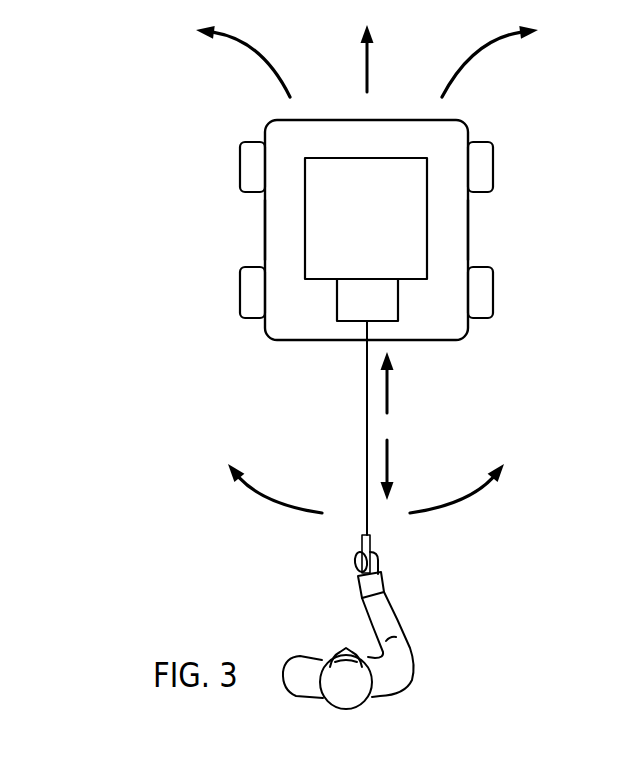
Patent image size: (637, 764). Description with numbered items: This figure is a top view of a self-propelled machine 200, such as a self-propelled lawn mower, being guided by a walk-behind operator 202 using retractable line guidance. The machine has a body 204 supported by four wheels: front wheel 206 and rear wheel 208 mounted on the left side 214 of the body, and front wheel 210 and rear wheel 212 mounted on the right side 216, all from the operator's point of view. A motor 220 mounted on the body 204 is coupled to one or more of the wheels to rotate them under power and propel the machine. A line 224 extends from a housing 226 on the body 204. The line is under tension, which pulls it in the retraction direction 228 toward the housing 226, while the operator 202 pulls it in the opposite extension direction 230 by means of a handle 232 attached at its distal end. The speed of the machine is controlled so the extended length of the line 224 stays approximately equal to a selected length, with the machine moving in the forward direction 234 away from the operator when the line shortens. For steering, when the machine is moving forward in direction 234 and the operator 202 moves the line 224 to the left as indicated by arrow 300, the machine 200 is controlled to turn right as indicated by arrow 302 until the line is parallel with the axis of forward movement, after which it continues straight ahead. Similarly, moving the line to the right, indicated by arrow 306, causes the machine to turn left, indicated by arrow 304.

The self-propelled machine 200 is at (99, 175).
The operator 202 is at (412, 678).
The body 204 is at (304, 342).
The wheel 206 is at (240, 172).
The wheel 208 is at (240, 288).
The wheel 210 is at (493, 170).
The wheel 212 is at (493, 292).
The left side 214 is at (265, 228).
The right side 216 is at (468, 228).
The motor 220 is at (318, 280).
The line 224 is at (366, 472).
The housing 226 is at (398, 300).
The retraction direction 228 is at (387, 395).
The extension direction 230 is at (387, 457).
The handle 232 is at (362, 545).
The forward direction 234 is at (367, 70).
The arrow 300 is at (263, 497).
The arrow 302 is at (491, 41).
The arrow 304 is at (241, 45).
The arrow 306 is at (470, 497).